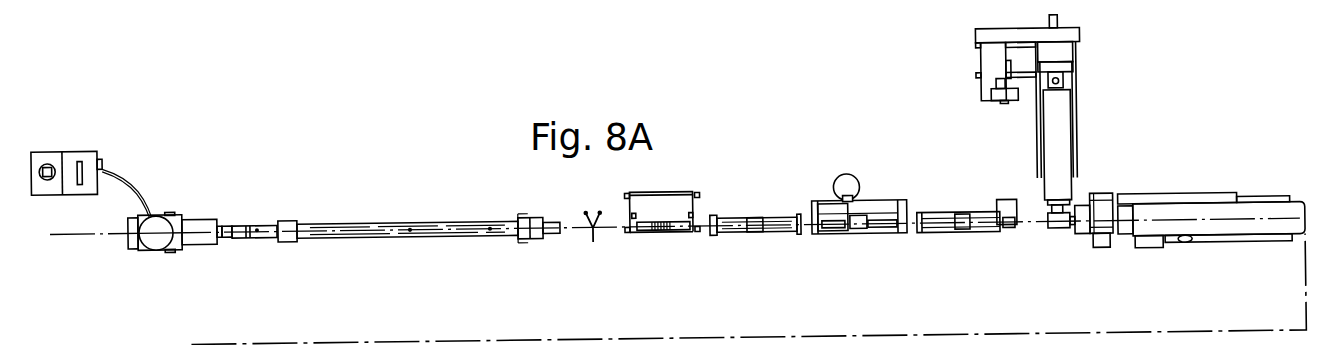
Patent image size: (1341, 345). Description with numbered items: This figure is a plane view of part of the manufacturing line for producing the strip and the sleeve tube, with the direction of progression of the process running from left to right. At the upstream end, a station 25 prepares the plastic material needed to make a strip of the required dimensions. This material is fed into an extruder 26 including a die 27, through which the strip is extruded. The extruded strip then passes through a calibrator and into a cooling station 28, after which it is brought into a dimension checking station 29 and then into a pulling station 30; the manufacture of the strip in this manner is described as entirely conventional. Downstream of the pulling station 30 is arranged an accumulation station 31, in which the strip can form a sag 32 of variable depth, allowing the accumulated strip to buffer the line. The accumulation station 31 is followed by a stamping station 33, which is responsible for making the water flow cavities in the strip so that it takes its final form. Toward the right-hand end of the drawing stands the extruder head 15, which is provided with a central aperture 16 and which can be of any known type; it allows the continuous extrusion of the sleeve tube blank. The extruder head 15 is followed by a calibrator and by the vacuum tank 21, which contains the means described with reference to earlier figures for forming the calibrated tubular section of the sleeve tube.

The extruder head 15 is at (1100, 145).
The central aperture 16 is at (1083, 241).
The vacuum tank 21 is at (1227, 238).
The station 25 is at (72, 158).
The extruder 26 is at (156, 246).
The die 27 is at (230, 240).
The cooling station 28 is at (360, 241).
The dimension checking station 29 is at (593, 249).
The pulling station 30 is at (667, 223).
The accumulation station 31 is at (757, 229).
The sag 32 is at (880, 219).
The stamping station 33 is at (960, 227).